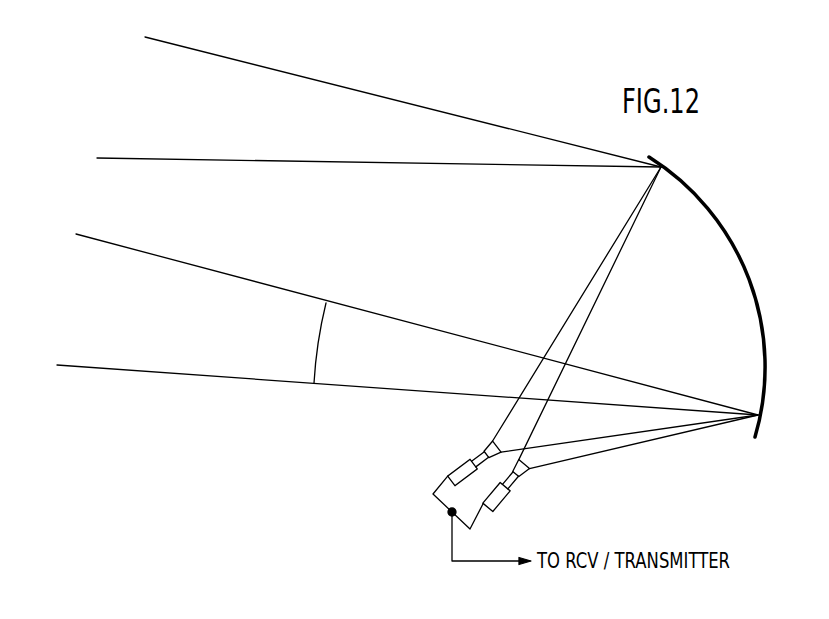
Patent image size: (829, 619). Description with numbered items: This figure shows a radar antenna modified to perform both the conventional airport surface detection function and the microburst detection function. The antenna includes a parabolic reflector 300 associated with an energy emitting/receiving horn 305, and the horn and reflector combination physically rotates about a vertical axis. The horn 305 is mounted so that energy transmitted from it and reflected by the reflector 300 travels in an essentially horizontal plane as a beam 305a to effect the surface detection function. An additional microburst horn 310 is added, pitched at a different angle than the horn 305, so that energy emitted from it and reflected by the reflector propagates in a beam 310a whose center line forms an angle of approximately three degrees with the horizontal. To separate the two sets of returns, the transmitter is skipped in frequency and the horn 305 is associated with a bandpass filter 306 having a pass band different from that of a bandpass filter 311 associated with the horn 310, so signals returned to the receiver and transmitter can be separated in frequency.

The parabolic reflector 300 is at (716, 216).
The energy emitting/receiving horn 305 is at (488, 445).
The beam 305a is at (195, 342).
The bandpass filter 306 is at (448, 476).
The microburst horn 310 is at (528, 468).
The beam 310a is at (290, 131).
The bandpass filter 311 is at (505, 499).